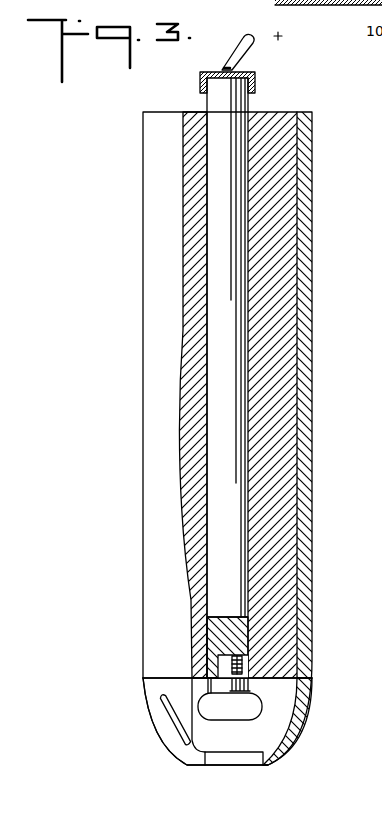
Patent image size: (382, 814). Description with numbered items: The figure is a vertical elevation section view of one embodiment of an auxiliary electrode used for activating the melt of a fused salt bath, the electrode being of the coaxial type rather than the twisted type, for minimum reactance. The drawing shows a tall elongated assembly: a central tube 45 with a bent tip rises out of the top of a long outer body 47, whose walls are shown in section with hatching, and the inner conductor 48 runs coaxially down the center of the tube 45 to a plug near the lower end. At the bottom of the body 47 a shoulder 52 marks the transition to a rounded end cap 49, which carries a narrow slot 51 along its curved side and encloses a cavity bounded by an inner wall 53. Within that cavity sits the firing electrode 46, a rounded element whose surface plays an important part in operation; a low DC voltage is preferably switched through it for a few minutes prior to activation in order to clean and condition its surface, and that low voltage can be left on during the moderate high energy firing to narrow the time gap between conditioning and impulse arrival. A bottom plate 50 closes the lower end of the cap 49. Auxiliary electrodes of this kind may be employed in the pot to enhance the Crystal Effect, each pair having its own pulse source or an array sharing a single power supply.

The nozzle tube 45 is at (246, 107).
The firing electrode 46 is at (262, 718).
The housing body 47 is at (148, 353).
The electrode rod 48 is at (285, 300).
The end cap 49 is at (152, 700).
The bottom plate 50 is at (243, 766).
The slot 51 is at (176, 730).
The shoulder joint 52 is at (143, 678).
The cavity wall 53 is at (210, 744).